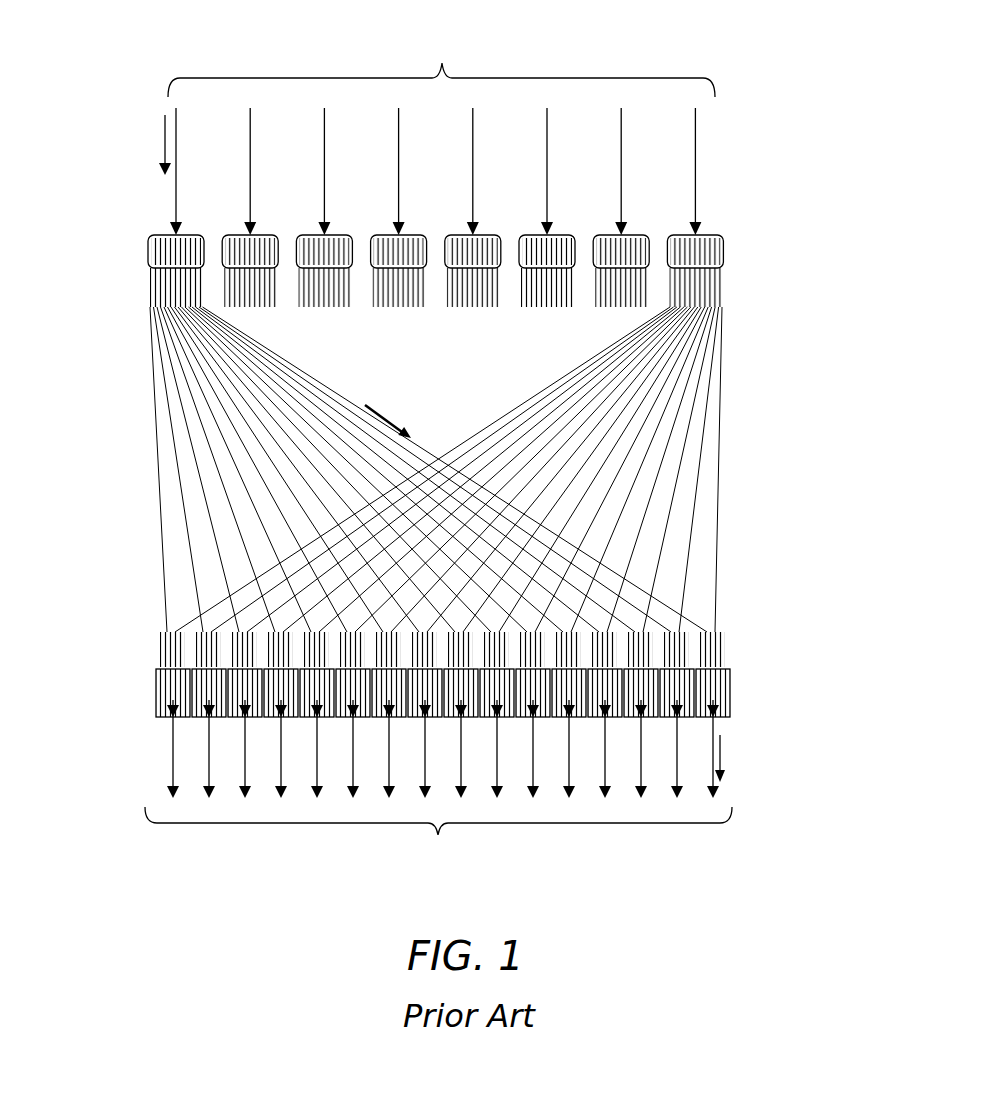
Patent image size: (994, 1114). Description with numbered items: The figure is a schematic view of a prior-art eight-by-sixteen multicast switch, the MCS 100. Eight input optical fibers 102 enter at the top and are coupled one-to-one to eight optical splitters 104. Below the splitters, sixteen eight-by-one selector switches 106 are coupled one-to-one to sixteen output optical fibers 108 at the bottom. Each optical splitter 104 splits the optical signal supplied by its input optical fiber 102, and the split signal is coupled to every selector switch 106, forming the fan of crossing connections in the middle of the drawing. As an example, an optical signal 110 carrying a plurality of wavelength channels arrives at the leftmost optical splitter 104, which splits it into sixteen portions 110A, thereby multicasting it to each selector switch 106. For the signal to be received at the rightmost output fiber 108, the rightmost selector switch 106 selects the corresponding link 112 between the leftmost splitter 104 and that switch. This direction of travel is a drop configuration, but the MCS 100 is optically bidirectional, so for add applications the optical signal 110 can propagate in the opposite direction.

The 8×16 MCS 100 is at (724, 46).
The input optical fibers 102 is at (441, 136).
The optical splitters 104 is at (160, 235).
The 8×1 selector switches 106 is at (140, 691).
The output optical fibers 108 is at (438, 785).
The optical signal 110 is at (162, 128).
The portions 110A is at (386, 412).
The link 112 is at (315, 384).